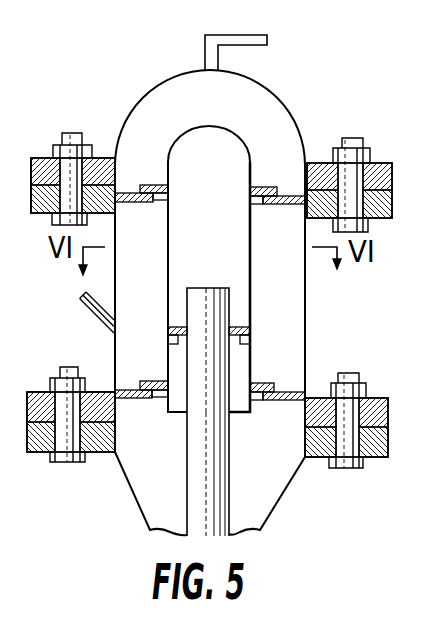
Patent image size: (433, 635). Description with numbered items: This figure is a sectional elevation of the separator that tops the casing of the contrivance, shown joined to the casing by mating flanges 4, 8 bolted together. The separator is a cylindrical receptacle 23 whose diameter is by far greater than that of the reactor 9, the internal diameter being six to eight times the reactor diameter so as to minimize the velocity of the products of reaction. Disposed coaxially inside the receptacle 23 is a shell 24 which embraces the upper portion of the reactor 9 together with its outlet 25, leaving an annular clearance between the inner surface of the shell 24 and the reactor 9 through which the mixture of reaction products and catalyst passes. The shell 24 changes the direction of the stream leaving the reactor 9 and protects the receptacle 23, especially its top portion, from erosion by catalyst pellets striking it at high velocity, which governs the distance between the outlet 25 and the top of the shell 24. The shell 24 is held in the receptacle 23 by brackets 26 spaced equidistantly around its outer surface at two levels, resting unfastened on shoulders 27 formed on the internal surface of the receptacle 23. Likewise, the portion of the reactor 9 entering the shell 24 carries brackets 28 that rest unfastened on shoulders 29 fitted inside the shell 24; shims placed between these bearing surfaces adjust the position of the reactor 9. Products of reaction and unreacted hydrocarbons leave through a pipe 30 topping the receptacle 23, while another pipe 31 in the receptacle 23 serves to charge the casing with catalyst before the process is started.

The flange 4 is at (374, 457).
The flange 8 is at (374, 398).
The reactor 9 is at (197, 428).
The cylindrical receptacle 23 is at (307, 355).
The shell 24 is at (252, 317).
The outlet 25 is at (197, 288).
The brackets 26 is at (265, 187).
The shoulders 27 is at (283, 205).
The brackets 28 is at (170, 328).
The shoulders 29 is at (167, 337).
The pipe 30 is at (205, 52).
The pipe 31 is at (85, 303).